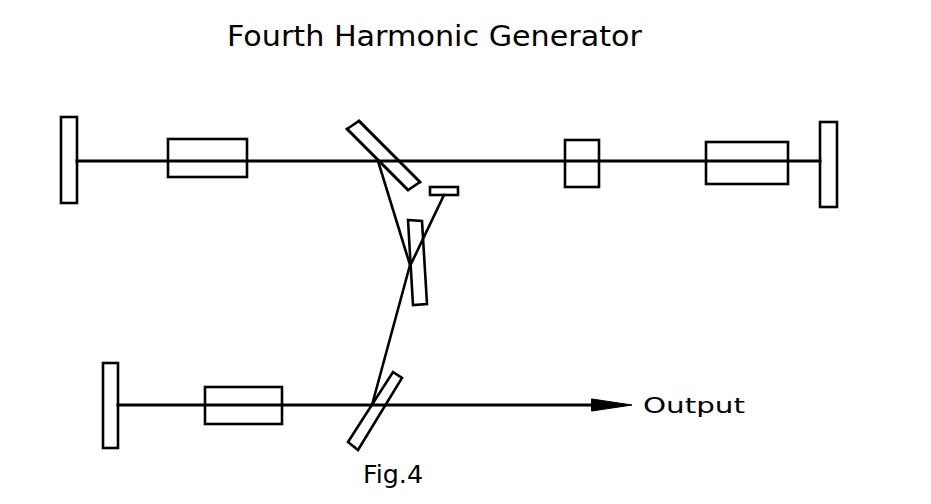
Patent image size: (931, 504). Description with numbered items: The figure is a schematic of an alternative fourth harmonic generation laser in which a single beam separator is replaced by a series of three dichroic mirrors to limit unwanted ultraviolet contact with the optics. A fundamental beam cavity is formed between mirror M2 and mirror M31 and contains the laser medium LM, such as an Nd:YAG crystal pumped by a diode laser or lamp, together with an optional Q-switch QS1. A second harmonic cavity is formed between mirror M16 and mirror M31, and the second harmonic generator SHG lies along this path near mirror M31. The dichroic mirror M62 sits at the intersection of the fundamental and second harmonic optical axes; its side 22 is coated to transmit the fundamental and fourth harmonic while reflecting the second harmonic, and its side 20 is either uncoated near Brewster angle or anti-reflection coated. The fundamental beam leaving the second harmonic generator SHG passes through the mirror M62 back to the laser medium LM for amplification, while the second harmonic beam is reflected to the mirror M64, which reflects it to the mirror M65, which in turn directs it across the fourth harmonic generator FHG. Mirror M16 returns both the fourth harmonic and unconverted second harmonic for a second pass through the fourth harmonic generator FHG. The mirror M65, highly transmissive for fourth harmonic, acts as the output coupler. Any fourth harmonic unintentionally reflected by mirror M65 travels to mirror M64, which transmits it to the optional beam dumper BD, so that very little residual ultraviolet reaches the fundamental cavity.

The first fundamental beam reflective surface M31 is at (83, 144).
The second harmonic generator SHG is at (207, 145).
The dichroic mirror M62 is at (363, 139).
The side 22 is at (363, 159).
The side 20 is at (389, 151).
The beam dumper BD is at (452, 225).
The Q-switch QS1 is at (597, 167).
The laser medium LM is at (747, 148).
The second fundamental beam reflective surface M2 is at (824, 147).
The mirror M64 is at (443, 262).
The mirror M16 is at (125, 389).
The fourth harmonic generator FHG is at (243, 389).
The mirror M65 is at (407, 409).